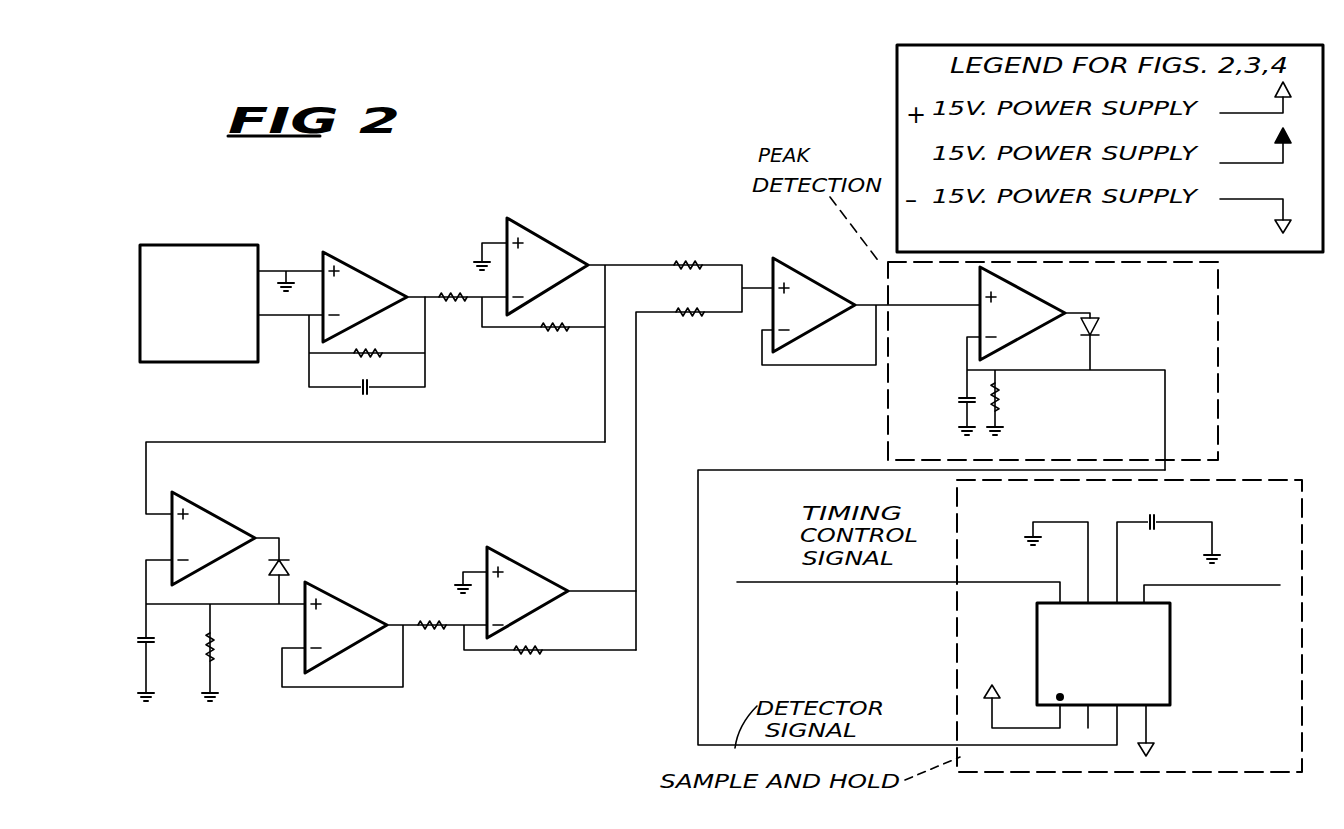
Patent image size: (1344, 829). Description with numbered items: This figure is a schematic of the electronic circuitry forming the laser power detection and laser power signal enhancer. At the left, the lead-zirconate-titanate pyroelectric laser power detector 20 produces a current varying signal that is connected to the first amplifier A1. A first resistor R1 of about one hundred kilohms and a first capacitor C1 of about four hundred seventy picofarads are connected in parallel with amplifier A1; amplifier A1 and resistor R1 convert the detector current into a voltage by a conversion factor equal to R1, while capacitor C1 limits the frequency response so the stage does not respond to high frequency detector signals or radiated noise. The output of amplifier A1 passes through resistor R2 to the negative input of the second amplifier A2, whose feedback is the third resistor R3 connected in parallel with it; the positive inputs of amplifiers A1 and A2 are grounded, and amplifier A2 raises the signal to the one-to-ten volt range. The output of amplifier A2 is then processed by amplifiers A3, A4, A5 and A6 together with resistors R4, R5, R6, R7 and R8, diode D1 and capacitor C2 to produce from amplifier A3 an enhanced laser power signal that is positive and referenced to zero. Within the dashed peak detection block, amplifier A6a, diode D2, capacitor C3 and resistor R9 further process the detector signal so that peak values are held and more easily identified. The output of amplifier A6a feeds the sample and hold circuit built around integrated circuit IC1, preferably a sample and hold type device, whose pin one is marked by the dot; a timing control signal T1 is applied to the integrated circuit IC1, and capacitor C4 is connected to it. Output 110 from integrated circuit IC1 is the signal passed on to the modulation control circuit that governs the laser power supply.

The laser power detector 20 is at (203, 363).
The first amplifier A1 is at (365, 297).
The second amplifier A2 is at (547, 266).
The amplifier A3 is at (814, 305).
The amplifier A4 is at (213, 538).
The amplifier A5 is at (346, 627).
The amplifier A6 is at (527, 592).
The amplifier A6a is at (1022, 313).
The first resistor R1 is at (367, 348).
The resistor R2 is at (455, 303).
The third resistor R3 is at (548, 333).
The resistor R4 is at (692, 259).
The resistor R5 is at (690, 318).
The resistor R6 is at (216, 641).
The resistor R7 is at (433, 631).
The resistor R8 is at (527, 655).
The resistor R9 is at (1002, 398).
The first capacitor C1 is at (367, 394).
The capacitor C2 is at (152, 643).
The capacitor C3 is at (962, 400).
The capacitor C4 is at (1148, 528).
The diode D1 is at (290, 568).
The diode D2 is at (1100, 330).
The integrated circuit IC1 is at (1103, 654).
The timing control signal input T1 is at (891, 576).
The output 110 is at (1208, 586).